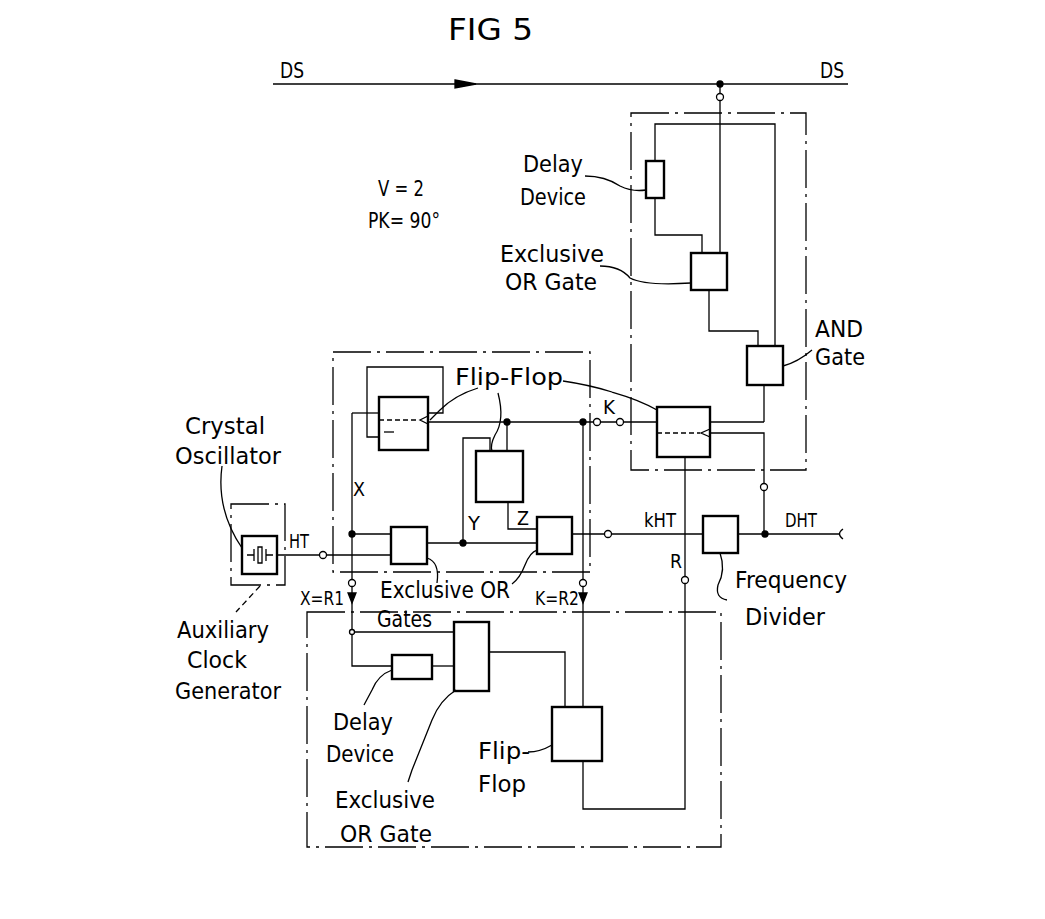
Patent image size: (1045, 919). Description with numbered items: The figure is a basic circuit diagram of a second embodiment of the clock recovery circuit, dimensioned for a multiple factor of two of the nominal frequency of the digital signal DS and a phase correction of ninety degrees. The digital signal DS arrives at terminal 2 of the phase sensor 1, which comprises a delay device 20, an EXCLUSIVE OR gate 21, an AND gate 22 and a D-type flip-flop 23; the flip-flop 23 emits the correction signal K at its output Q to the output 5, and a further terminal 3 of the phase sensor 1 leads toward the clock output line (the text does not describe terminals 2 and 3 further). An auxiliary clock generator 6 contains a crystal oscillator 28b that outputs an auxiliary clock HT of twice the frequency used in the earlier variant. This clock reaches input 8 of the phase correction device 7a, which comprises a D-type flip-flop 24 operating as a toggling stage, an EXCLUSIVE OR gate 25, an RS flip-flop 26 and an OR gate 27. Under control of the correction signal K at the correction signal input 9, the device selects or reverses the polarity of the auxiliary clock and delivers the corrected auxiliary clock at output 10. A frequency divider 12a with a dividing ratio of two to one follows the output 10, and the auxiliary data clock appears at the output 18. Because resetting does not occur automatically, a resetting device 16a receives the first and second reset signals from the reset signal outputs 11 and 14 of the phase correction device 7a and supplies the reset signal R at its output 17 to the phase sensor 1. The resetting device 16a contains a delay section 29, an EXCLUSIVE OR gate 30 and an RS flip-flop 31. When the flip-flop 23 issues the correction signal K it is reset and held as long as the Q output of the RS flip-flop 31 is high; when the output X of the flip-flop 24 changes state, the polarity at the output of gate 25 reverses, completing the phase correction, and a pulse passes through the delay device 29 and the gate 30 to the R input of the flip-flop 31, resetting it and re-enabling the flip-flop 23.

The phase sensor 1 is at (806, 283).
The input terminal 2 is at (727, 168).
The terminal 3 is at (771, 504).
The output 5 is at (621, 438).
The auxiliary clock generator 6 is at (278, 504).
The phase correction device 7a is at (478, 352).
The input 8 is at (354, 542).
The correction signal input 9 is at (598, 438).
The output 10 is at (653, 519).
The reset signal output 11 is at (362, 602).
The frequency divider 12a is at (706, 516).
The reset signal output 14 is at (594, 641).
The resetting device 16a is at (721, 717).
The output 17 is at (646, 687).
The output 18 is at (853, 535).
The delay device 20 is at (664, 180).
The EXCLUSIVE OR gate 21 is at (727, 272).
The AND gate 22 is at (747, 368).
The D-type flip-flop 23 is at (672, 407).
The D-type flip-flop 24 is at (407, 391).
The EXCLUSIVE OR gate 25 is at (405, 523).
The RS flip-flop 26 is at (523, 478).
The OR gate 27 is at (548, 517).
The crystal oscillator 28b is at (259, 543).
The delay section 29 is at (396, 679).
The EXCLUSIVE OR gate 30 is at (472, 691).
The RS flip-flop 31 is at (602, 733).